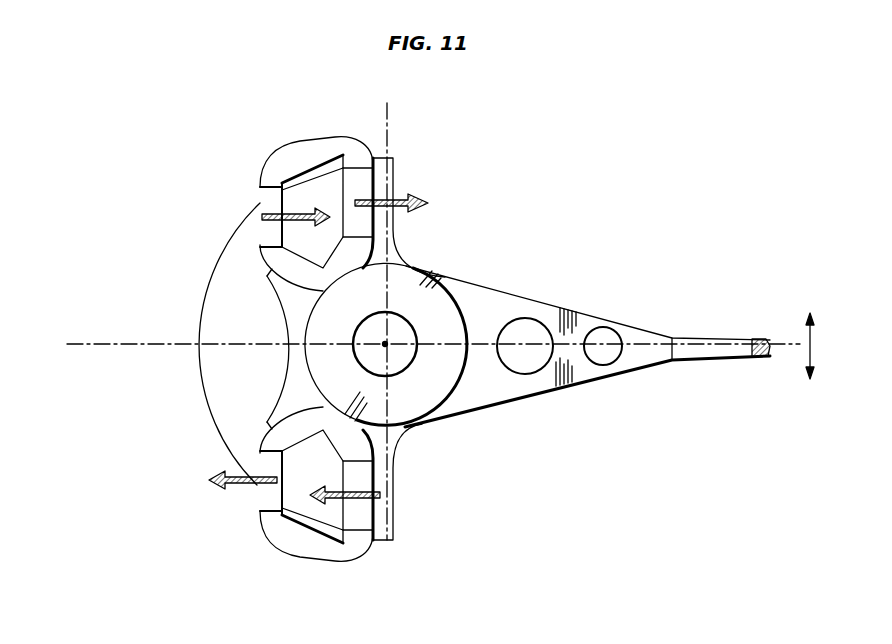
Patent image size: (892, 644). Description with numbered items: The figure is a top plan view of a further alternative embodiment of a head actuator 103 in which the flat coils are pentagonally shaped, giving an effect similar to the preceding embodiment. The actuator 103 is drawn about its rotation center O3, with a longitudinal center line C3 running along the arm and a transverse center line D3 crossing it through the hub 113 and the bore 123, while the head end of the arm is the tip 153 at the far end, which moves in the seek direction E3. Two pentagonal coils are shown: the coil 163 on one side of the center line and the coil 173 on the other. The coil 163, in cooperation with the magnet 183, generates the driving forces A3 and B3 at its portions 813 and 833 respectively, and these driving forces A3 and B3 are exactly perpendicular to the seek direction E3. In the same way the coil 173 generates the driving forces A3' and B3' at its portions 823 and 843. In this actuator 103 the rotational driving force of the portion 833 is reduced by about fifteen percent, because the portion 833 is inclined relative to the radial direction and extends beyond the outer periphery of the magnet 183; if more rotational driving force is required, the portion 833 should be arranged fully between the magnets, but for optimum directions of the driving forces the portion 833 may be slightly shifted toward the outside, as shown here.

The head actuator 103 is at (647, 266).
The hub portion 113 is at (400, 357).
The bearing bore 123 is at (397, 405).
The head mounting tip 153 is at (765, 358).
The coil 163 is at (314, 182).
The coil 173 is at (275, 512).
The magnet 183 is at (205, 277).
The portion 813 is at (360, 177).
The portion 823 is at (355, 510).
The portion 833 is at (267, 205).
The portion 843 is at (270, 492).
The arm center line C3 is at (416, 345).
The transverse center line D3 is at (387, 306).
The rotation center O3 is at (384, 342).
The seek direction E3 is at (824, 344).
The driving force A3 is at (407, 203).
The driving force B3 is at (296, 207).
The driving force A3' is at (340, 484).
The driving force B3' is at (223, 479).